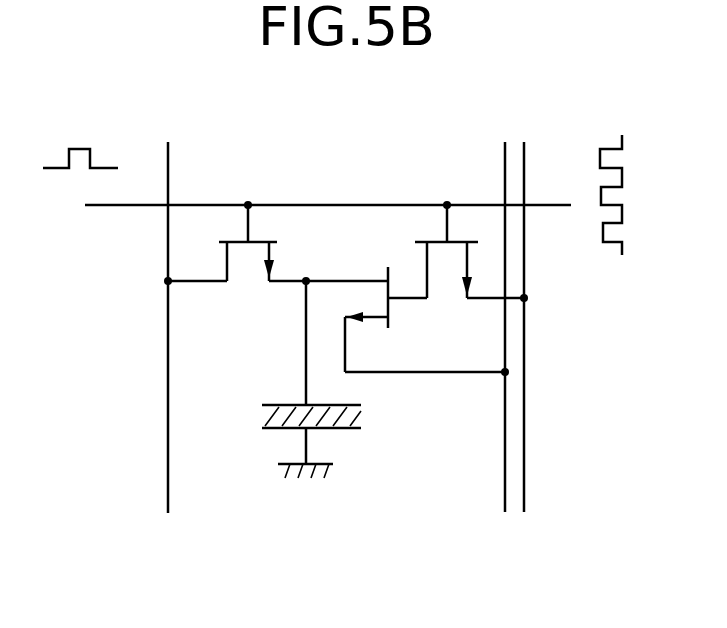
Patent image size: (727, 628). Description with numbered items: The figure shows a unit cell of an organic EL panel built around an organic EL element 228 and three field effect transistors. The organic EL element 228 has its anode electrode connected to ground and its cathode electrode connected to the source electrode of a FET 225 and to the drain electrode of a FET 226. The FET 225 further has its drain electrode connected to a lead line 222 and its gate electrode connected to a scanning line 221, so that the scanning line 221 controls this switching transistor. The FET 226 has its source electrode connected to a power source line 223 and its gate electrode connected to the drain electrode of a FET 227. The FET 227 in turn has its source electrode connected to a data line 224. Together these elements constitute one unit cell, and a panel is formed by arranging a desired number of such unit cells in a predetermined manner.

The scanning line 221 is at (112, 208).
The lead line 222 is at (168, 166).
The power source line 223 is at (505, 162).
The data line 224 is at (524, 163).
The FET 225 is at (237, 260).
The FET 226 is at (407, 321).
The FET 227 is at (458, 266).
The organic EL element 228 is at (345, 379).